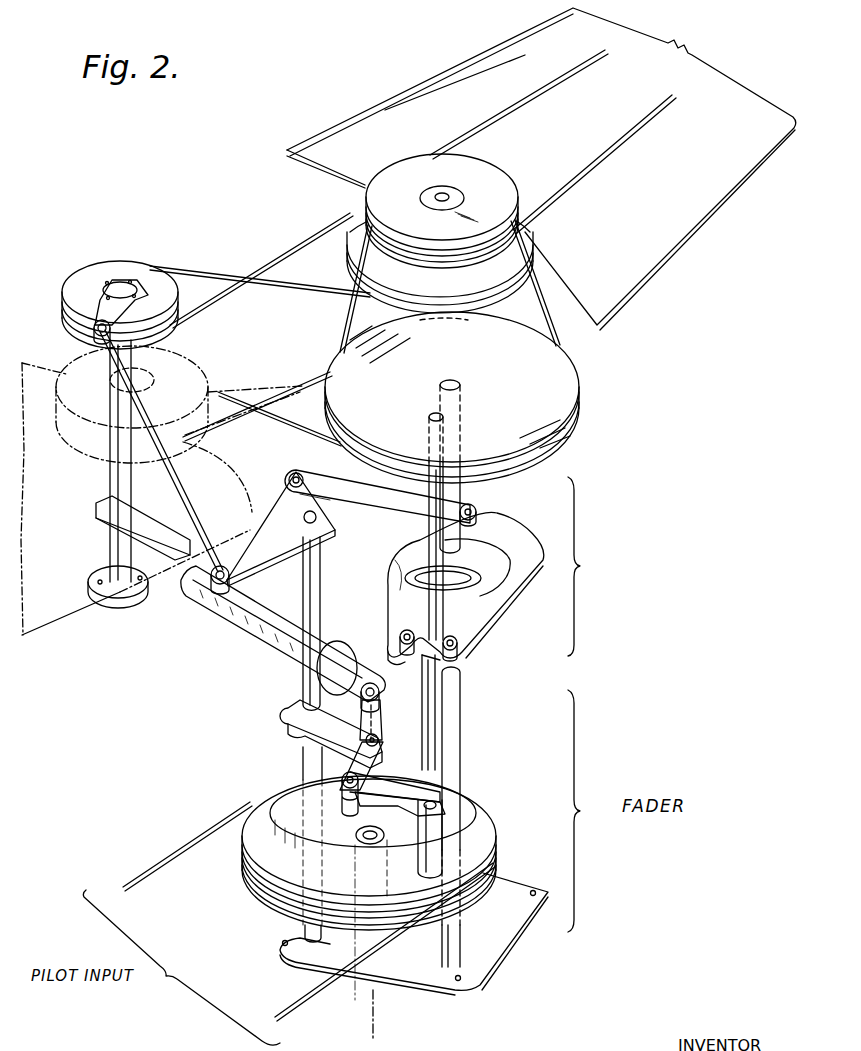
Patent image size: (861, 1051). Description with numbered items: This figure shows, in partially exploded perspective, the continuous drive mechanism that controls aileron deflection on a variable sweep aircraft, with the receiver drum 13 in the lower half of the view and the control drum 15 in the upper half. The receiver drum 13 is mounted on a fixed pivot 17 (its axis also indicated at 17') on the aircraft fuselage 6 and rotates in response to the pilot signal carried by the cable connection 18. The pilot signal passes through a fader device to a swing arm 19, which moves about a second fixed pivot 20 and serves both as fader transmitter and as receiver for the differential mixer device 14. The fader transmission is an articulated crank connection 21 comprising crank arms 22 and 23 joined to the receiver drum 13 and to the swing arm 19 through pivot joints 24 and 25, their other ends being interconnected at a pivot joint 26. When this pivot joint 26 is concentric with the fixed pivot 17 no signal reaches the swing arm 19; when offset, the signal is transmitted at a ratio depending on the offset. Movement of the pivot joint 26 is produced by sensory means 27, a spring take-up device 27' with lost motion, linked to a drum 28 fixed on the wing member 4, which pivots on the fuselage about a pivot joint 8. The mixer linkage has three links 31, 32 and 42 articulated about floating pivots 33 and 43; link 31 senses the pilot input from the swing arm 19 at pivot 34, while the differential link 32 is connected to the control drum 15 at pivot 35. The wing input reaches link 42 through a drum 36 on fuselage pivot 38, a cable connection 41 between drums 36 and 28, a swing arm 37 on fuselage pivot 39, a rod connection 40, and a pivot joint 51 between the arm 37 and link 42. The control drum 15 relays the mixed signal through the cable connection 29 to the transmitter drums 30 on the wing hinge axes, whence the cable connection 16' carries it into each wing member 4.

The wing member 4 is at (70, 636).
The aircraft fuselage 6 is at (414, 934).
The pivot joint 8 is at (382, 161).
The receiver drum 13 is at (277, 787).
The differential mixer device 14 is at (502, 638).
The control drum 15 is at (574, 430).
The cable connection 16' is at (600, 164).
The fixed pivot 17 is at (326, 854).
The fixed pivot 17' is at (385, 878).
The cable connection 18 is at (172, 860).
The swing arm 19 is at (392, 600).
The fixed pivot 20 is at (455, 405).
The crank connection 21 is at (347, 822).
The crank arm 22 is at (384, 812).
The crank arm 23 is at (398, 770).
The pivot joint 24 is at (420, 856).
The pivot joint 25 is at (424, 710).
The pivot joint 26 is at (343, 778).
The sensory means 27 is at (271, 690).
The spring take-up device 27' is at (283, 635).
The drum 28 is at (348, 262).
The cable connection 29 is at (348, 314).
The transmitter drum 30 is at (372, 225).
The link 31 is at (420, 660).
The differential link 32 is at (497, 616).
The floating pivot 33 is at (462, 652).
The pivot 34 is at (400, 637).
The pivot 35 is at (430, 526).
The drum 36 is at (84, 275).
The swing arm 37 is at (265, 520).
The fuselage pivot 38 is at (110, 482).
The fuselage pivot 39 is at (320, 565).
The rod connection 40 is at (195, 468).
The cable connection 41 is at (220, 272).
The link 42 is at (322, 474).
The floating pivot 43 is at (478, 506).
The pivot joint 51 is at (292, 472).